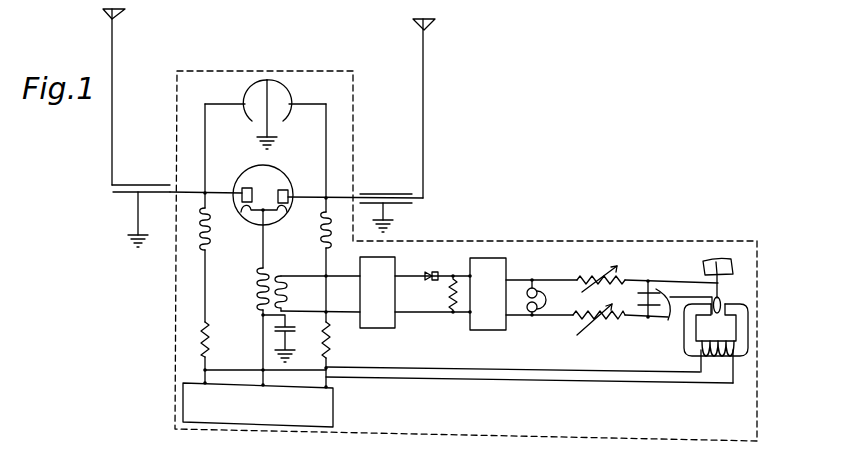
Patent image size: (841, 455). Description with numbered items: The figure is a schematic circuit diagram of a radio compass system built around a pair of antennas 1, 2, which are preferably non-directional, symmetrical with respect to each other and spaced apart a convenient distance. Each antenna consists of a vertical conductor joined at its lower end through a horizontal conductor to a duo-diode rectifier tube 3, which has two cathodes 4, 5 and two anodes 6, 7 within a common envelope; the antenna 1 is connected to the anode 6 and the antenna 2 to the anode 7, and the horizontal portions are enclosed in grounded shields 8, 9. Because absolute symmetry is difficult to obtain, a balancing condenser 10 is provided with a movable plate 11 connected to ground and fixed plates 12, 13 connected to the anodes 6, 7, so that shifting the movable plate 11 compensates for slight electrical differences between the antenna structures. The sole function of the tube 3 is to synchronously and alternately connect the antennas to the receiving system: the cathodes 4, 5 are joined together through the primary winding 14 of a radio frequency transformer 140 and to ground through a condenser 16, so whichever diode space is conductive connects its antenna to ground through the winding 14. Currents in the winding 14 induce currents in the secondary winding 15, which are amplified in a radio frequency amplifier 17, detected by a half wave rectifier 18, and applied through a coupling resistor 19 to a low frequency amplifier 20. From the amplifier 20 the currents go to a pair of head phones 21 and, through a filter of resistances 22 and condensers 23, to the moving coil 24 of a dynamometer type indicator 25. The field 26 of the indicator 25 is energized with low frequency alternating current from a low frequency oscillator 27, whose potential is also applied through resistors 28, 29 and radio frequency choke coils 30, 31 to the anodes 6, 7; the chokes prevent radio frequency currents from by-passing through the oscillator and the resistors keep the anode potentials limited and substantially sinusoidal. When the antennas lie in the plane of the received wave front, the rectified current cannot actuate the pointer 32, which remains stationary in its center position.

The antenna 1 is at (113, 43).
The antenna 2 is at (424, 63).
The duo-diode rectifier tube 3 is at (273, 197).
The cathode 4 is at (243, 213).
The cathode 5 is at (285, 213).
The anode 6 is at (243, 189).
The anode 7 is at (289, 193).
The grounded shield 8 is at (113, 196).
The grounded shield 9 is at (406, 204).
The balancing condenser 10 is at (265, 96).
The movable plate 11 is at (266, 81).
The fixed plate 12 is at (251, 95).
The fixed plate 13 is at (287, 97).
The primary winding 14 is at (256, 291).
The radio frequency transformer 140 is at (270, 267).
The secondary winding 15 is at (287, 292).
The condenser 16 is at (296, 329).
The radio frequency amplifier 17 is at (385, 329).
The half wave rectifier 18 is at (433, 271).
The coupling resistor 19 is at (450, 298).
The low frequency amplifier 20 is at (492, 331).
The head phones 21 is at (544, 300).
The resistance 22 is at (599, 303).
The condenser 23 is at (665, 323).
The moving coil 24 is at (726, 305).
The dynamometer type indicator 25 is at (751, 333).
The field 26 is at (743, 362).
The low frequency oscillator 27 is at (358, 411).
The resistor 28 is at (207, 341).
The resistor 29 is at (328, 345).
The radio frequency choke coil 30 is at (203, 226).
The radio frequency choke coil 31 is at (329, 228).
The pointer 32 is at (704, 268).